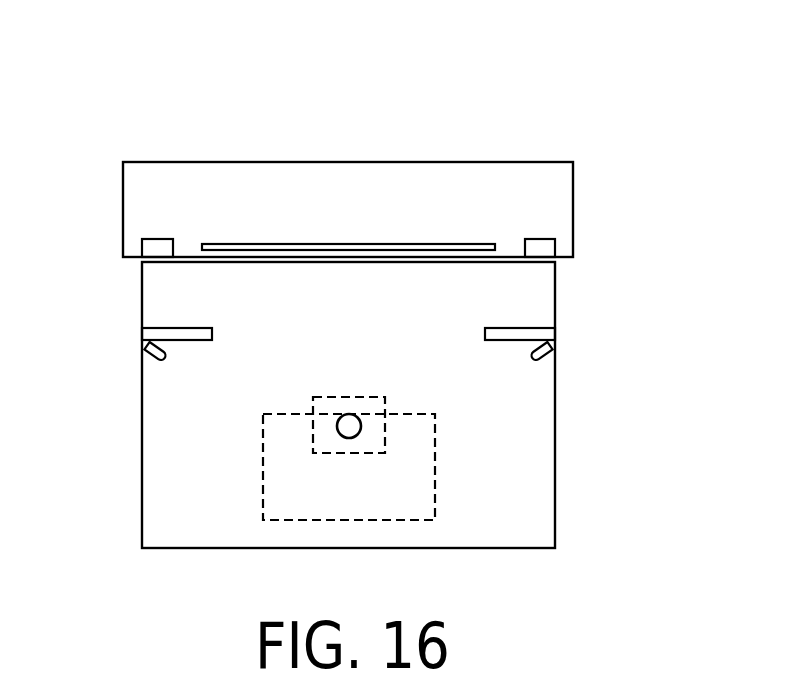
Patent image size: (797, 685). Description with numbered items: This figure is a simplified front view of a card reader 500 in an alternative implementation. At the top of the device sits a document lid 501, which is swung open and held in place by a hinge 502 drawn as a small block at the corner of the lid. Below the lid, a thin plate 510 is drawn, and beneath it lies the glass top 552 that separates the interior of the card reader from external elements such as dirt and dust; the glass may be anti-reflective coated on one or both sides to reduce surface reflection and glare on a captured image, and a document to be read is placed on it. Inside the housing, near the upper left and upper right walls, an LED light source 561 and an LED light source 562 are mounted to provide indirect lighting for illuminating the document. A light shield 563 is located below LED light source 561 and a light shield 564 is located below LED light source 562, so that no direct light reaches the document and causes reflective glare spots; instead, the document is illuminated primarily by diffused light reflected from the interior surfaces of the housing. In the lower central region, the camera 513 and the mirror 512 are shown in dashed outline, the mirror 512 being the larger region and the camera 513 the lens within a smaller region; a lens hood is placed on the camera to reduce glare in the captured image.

The card reader 500 is at (672, 75).
The document lid 501 is at (123, 205).
The hinge 502 is at (556, 245).
The display panel 510 is at (478, 244).
The glass top 552 is at (507, 257).
The light shield 563 is at (170, 328).
The light shield 564 is at (525, 328).
The LED light source 561 is at (152, 358).
The LED light source 562 is at (548, 358).
The mirror 512 is at (417, 414).
The camera 513 is at (355, 413).